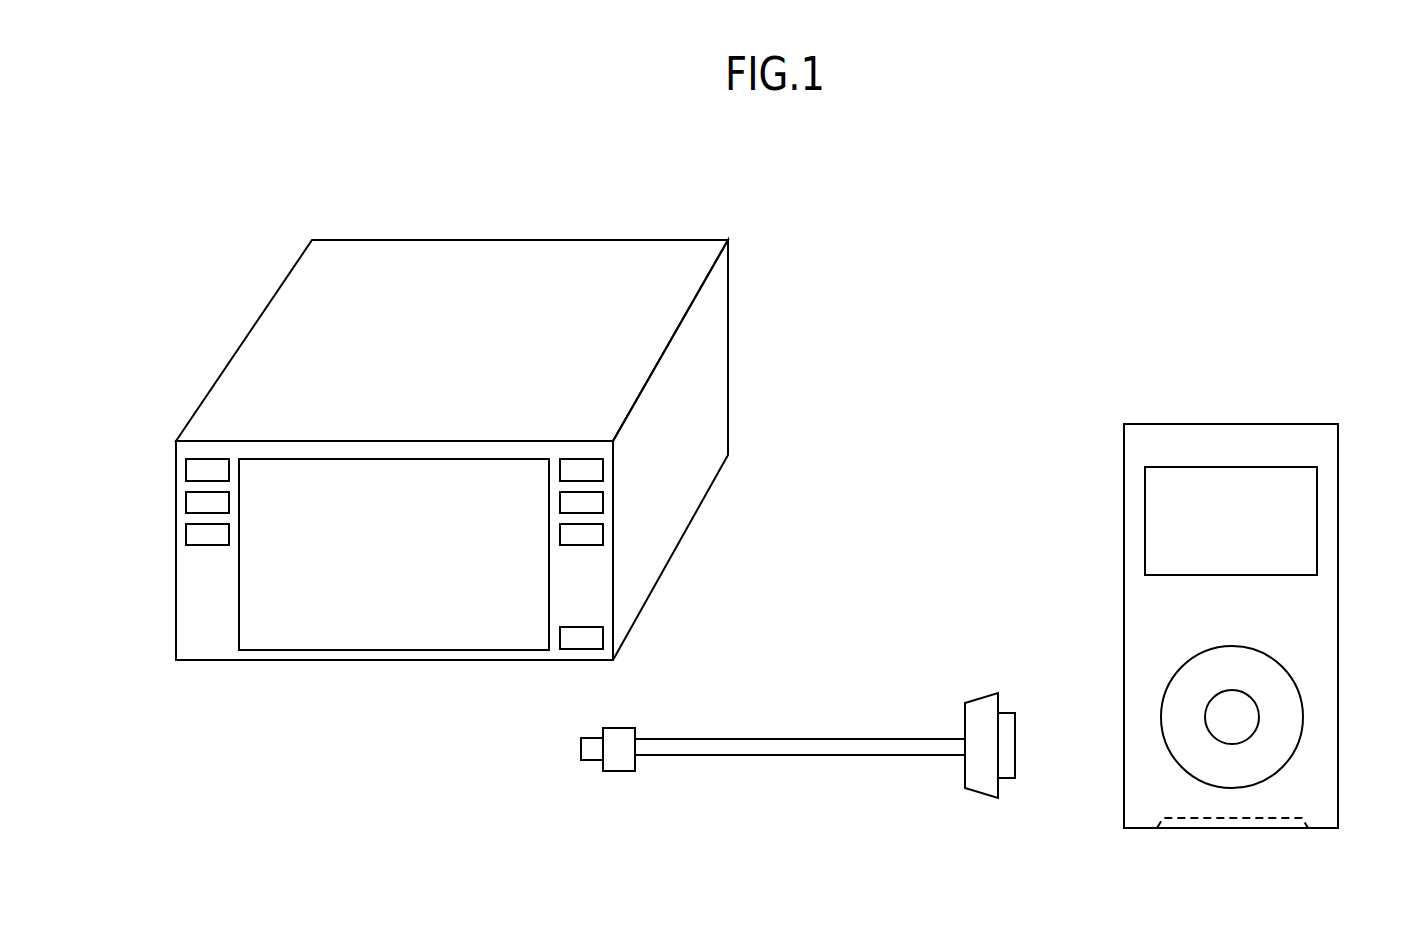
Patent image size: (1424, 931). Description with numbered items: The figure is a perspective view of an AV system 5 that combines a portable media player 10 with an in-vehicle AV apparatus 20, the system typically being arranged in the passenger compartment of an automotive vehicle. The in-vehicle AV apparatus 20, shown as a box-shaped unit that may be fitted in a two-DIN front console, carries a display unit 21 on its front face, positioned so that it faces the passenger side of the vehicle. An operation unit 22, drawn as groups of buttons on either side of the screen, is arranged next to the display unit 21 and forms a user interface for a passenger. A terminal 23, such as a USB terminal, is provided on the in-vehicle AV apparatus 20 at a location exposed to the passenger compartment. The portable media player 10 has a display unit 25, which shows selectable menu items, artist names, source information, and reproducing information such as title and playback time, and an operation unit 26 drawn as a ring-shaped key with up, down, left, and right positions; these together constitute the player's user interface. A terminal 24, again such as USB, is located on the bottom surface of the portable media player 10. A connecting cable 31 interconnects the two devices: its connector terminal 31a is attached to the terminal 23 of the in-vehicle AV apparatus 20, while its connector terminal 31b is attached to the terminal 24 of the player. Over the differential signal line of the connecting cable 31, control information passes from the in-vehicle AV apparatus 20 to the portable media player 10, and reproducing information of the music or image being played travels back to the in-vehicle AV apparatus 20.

The AV system 5 is at (982, 261).
The portable media player 10 is at (1288, 424).
The in-vehicle AV apparatus 20 is at (572, 240).
The display unit 21 is at (323, 458).
The operation unit 22 is at (186, 534).
The terminal 23 is at (603, 638).
The terminal 24 is at (1233, 829).
The display unit 25 is at (1222, 467).
The operation unit 26 is at (1314, 684).
The connecting cable 31 is at (810, 739).
The connector terminal 31a is at (620, 772).
The connector terminal 31b is at (990, 799).